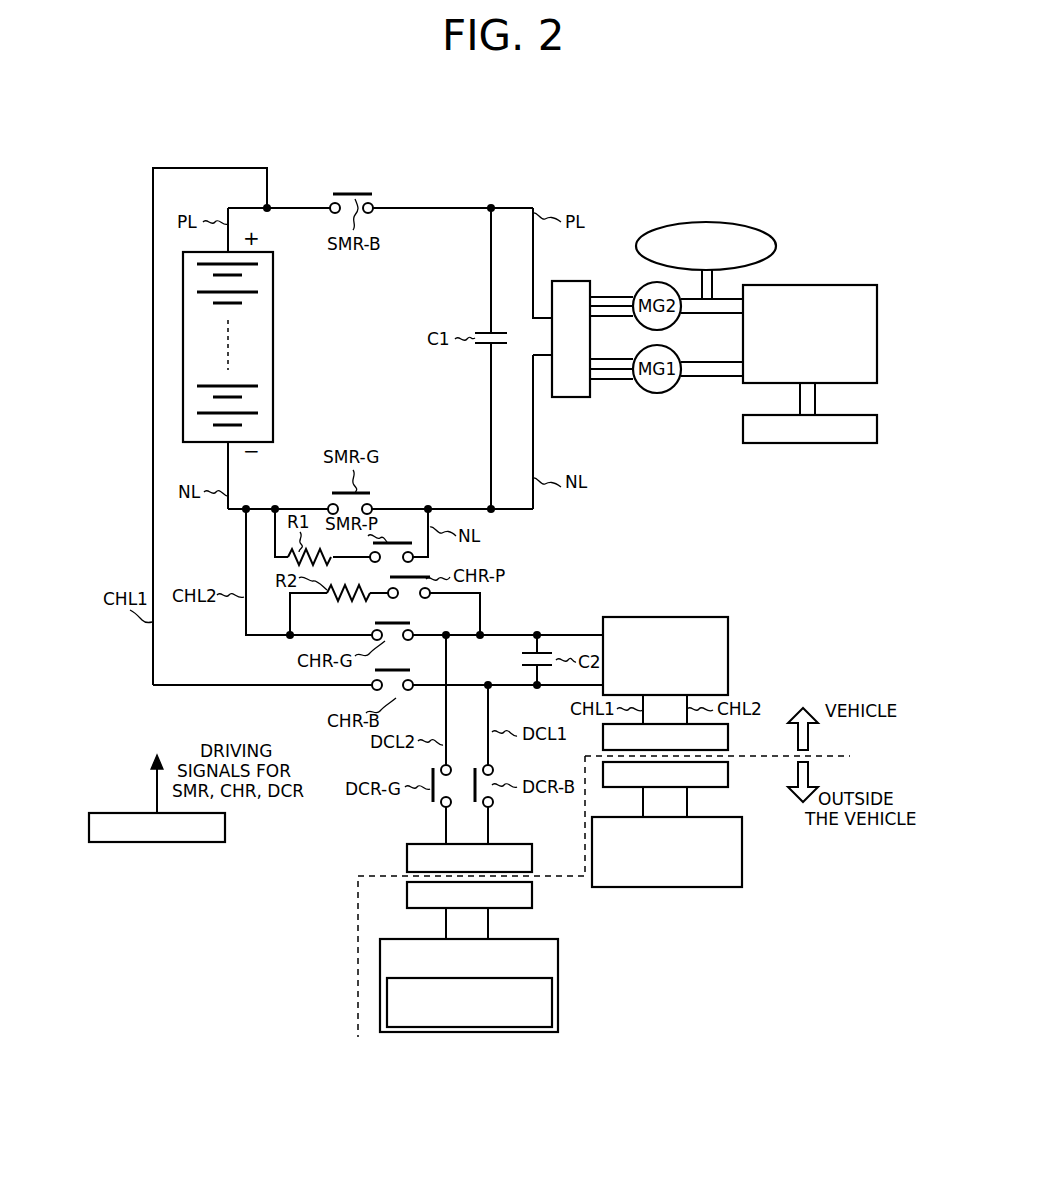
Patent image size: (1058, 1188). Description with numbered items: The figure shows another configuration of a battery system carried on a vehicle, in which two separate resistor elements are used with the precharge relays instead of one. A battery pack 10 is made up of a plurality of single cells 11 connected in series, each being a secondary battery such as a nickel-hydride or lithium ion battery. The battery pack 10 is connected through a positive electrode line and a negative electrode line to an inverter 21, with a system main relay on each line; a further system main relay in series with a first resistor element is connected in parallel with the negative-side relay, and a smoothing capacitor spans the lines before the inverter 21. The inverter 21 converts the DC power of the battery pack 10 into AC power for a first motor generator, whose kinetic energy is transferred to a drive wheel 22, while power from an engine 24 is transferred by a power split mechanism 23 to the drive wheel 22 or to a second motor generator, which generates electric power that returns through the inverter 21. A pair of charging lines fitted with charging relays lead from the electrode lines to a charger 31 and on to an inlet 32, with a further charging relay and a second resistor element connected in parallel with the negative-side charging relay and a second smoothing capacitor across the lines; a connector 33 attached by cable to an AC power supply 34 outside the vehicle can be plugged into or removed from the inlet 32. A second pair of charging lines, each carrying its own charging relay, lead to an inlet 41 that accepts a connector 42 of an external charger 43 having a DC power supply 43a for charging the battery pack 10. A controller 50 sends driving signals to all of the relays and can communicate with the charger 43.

The battery pack 10 is at (273, 347).
The single cell 11 is at (258, 271).
The inverter 21 is at (570, 399).
The drive wheel 22 is at (706, 223).
The power split mechanism 23 is at (814, 285).
The engine 24 is at (808, 445).
The charger 31 is at (729, 656).
The inlet 32 is at (729, 738).
The connector 33 is at (729, 773).
The AC power supply 34 is at (743, 849).
The inlet 41 is at (533, 856).
The connector 42 is at (533, 895).
The charger 43 is at (559, 955).
The DC power supply 43a is at (553, 997).
The controller 50 is at (226, 829).